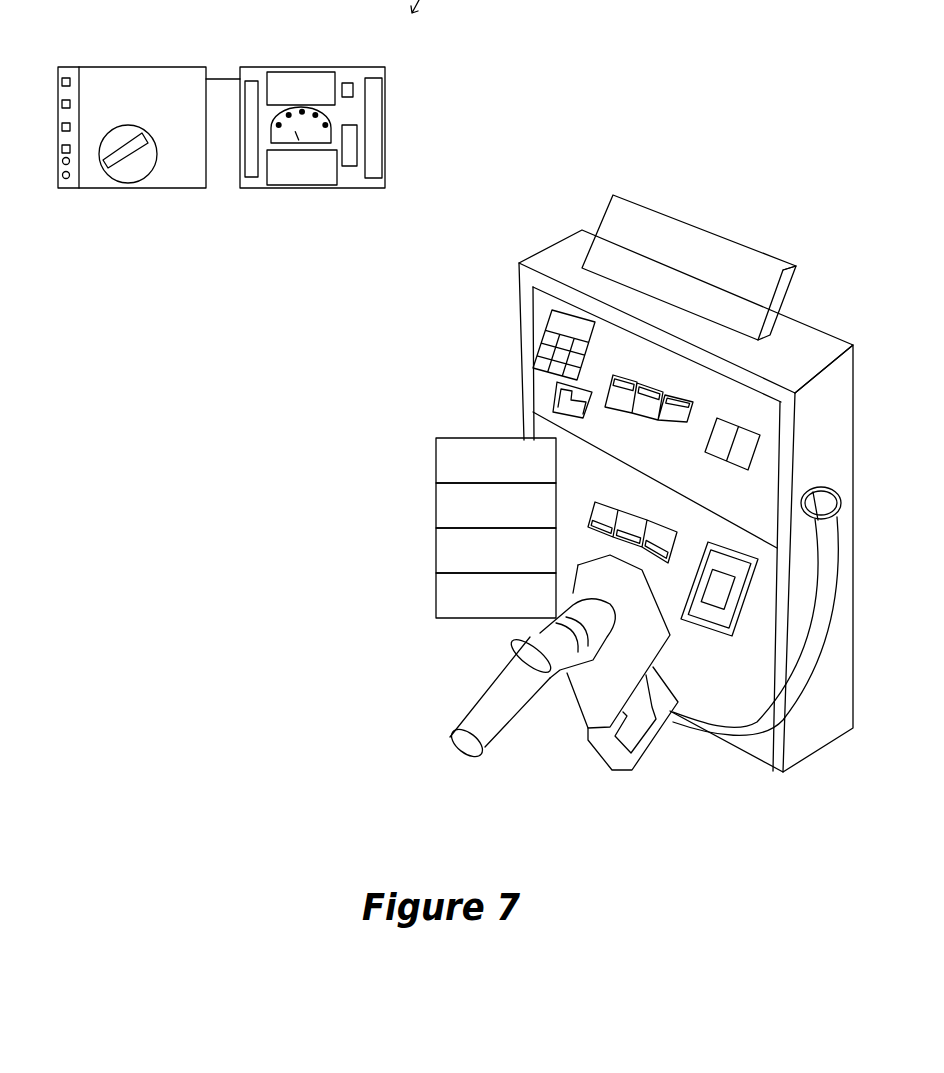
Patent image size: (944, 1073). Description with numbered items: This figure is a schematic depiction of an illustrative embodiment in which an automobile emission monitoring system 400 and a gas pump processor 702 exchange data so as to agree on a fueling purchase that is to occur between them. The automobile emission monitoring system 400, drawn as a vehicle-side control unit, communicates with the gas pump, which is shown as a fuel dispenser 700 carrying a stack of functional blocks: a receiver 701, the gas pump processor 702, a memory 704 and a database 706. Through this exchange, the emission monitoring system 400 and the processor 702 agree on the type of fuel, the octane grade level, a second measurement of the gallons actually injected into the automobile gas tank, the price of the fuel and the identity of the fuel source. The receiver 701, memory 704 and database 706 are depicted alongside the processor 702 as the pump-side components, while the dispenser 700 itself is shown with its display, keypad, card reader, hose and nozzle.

The automobile emission monitoring system 400 is at (182, 97).
The fuel dispenser 700 is at (523, 358).
The receiver (RCVR) 701 is at (436, 473).
The gas pump processor 702 is at (436, 523).
The memory 704 is at (436, 568).
The database 706 is at (436, 615).